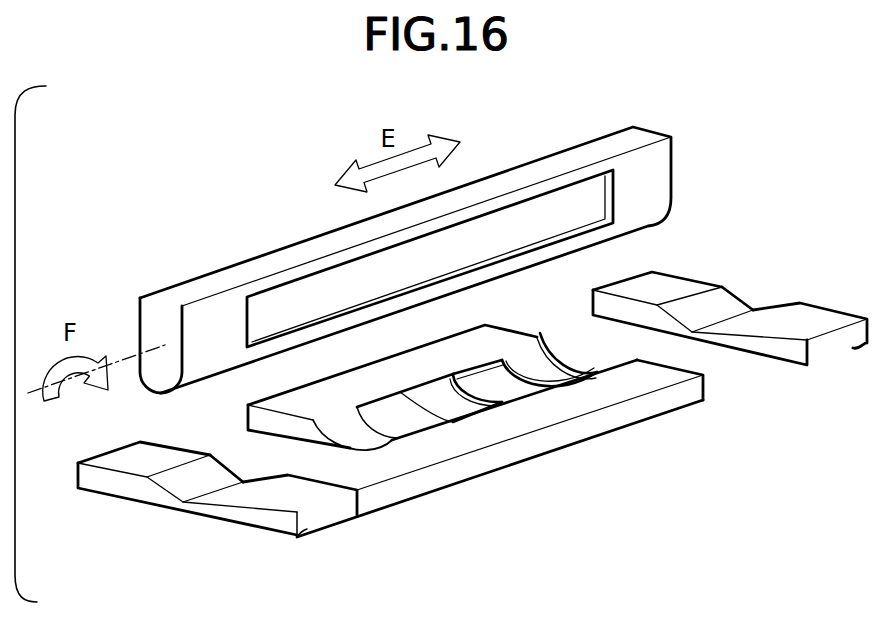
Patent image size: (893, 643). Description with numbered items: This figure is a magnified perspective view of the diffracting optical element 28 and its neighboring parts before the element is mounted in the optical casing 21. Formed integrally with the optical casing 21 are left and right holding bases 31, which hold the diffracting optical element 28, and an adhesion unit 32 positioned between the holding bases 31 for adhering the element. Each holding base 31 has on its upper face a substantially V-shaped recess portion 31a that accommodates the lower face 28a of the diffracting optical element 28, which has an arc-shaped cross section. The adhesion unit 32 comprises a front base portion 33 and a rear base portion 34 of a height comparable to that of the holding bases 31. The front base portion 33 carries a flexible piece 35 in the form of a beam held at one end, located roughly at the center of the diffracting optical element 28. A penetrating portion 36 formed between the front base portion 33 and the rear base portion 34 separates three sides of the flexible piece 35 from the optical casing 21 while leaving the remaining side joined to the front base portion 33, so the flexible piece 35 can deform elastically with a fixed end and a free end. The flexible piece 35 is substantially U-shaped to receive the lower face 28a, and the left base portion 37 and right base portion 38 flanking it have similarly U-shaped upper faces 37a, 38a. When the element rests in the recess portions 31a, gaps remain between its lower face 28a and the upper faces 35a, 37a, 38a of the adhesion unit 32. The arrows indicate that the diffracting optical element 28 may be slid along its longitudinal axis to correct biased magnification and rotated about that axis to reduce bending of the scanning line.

The optical casing 21 is at (474, 394).
The diffracting optical element 28 is at (354, 287).
The lower face of the diffracting optical element 28a is at (150, 391).
The holding base 31 is at (157, 453).
The recess portion 31a is at (173, 484).
The adhesion unit 32 is at (504, 402).
The front base portion 33 is at (365, 387).
The rear base portion 34 is at (570, 405).
The flexible piece 35 is at (441, 468).
The upper face of the flexible piece 35a is at (445, 402).
The penetrating portion 36 is at (507, 395).
The left base portion 37 is at (321, 515).
The upper face of the left base portion 37a is at (333, 442).
The right base portion 38 is at (614, 392).
The upper face of the right base portion 38a is at (540, 352).